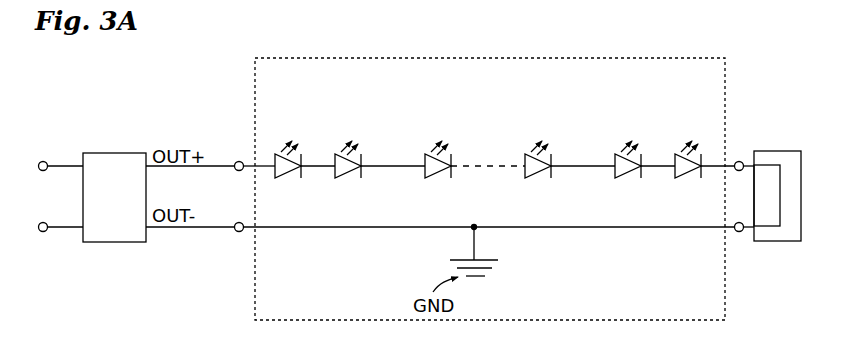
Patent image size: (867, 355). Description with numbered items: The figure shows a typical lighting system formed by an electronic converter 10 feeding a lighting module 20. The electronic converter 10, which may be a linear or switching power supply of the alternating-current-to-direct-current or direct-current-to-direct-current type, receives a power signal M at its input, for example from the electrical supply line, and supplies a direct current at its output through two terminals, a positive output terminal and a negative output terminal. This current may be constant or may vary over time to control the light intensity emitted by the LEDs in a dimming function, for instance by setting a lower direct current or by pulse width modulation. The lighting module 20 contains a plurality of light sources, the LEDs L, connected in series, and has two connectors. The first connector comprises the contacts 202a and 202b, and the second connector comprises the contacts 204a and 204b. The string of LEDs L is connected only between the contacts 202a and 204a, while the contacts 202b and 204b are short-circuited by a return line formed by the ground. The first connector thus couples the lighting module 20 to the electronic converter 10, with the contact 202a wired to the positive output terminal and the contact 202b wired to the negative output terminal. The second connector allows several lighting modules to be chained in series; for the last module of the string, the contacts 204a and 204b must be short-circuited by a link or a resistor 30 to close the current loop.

The electronic converter 10 is at (128, 151).
The lighting module 20 is at (555, 58).
The resistor 30 is at (787, 150).
The contact 202a is at (237, 161).
The contact 202b is at (237, 232).
The contact 204a is at (741, 161).
The contact 204b is at (741, 232).
The LEDs L is at (348, 132).
The power signal M is at (42, 194).